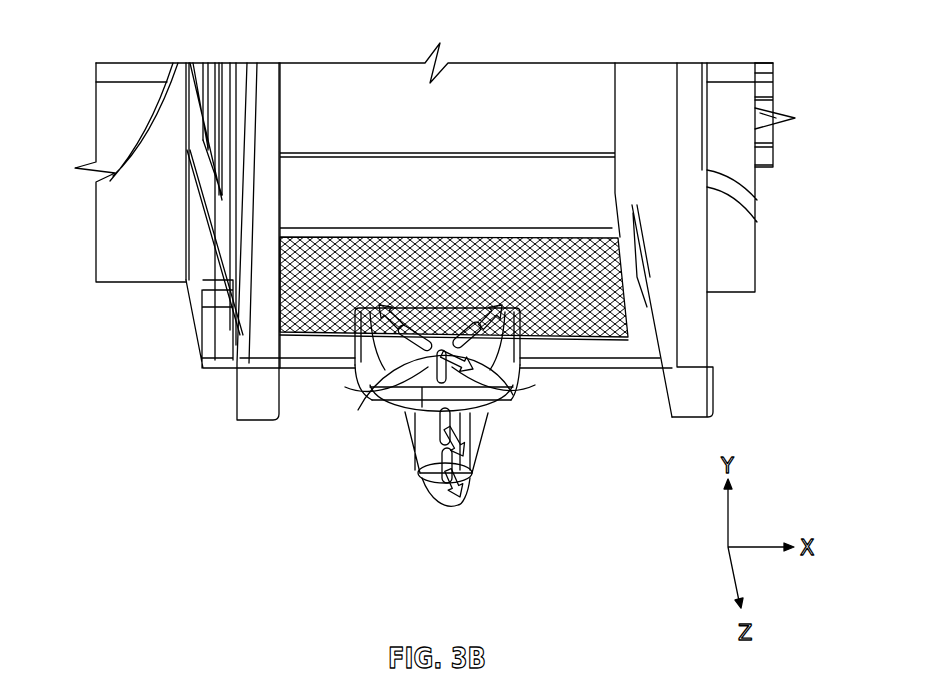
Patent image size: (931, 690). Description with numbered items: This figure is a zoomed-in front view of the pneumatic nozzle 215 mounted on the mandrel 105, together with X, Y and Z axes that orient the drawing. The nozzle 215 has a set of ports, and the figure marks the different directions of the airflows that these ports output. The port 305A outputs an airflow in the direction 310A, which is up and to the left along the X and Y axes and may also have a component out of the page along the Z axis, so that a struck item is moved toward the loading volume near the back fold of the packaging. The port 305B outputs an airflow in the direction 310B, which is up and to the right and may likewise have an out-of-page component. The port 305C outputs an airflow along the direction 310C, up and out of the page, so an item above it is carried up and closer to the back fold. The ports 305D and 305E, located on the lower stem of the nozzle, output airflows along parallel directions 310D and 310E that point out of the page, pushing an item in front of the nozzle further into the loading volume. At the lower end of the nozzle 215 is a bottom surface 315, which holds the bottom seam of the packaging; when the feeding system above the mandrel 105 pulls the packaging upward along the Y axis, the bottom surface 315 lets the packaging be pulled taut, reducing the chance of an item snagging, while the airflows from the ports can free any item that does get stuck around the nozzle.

The mandrel 105 is at (677, 28).
The pneumatic nozzle 215 is at (490, 410).
The port 305A is at (408, 343).
The port 305B is at (437, 376).
The port 305C is at (485, 345).
The port 305D is at (440, 430).
The port 305E is at (441, 470).
The direction 310A is at (392, 310).
The direction 310B is at (470, 368).
The direction 310C is at (498, 307).
The direction 310D is at (463, 457).
The direction 310E is at (458, 497).
The bottom surface 315 is at (440, 488).